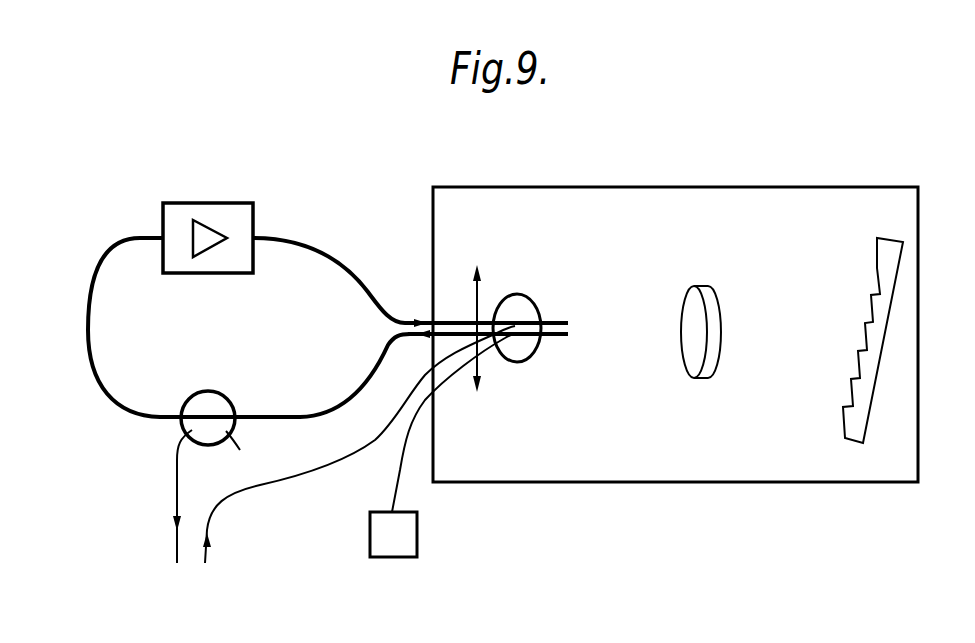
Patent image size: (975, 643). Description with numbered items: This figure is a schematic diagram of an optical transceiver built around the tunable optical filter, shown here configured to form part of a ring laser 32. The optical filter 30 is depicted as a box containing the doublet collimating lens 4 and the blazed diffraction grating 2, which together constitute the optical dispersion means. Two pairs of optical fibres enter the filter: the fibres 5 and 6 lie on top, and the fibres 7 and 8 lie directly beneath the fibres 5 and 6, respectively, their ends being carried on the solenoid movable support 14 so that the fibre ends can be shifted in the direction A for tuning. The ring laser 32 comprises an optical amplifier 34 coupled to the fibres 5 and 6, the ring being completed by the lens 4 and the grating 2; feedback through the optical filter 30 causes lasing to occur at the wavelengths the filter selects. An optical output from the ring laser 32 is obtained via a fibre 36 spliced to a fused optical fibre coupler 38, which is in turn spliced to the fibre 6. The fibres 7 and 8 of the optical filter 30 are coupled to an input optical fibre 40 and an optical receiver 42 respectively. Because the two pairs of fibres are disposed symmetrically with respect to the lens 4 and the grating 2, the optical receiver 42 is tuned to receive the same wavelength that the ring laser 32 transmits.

The blazed diffraction grating 2 is at (872, 270).
The doublet collimating lens 4 is at (720, 296).
The fibre 5 is at (405, 320).
The fibre 6 is at (398, 340).
The fibre 7 is at (549, 345).
The fibre 8 is at (561, 345).
The solenoid movable support 14 is at (522, 310).
The optical filter 30 is at (621, 182).
The ring laser 32 is at (376, 222).
The optical amplifier 34 is at (217, 203).
The fibre 36 is at (175, 472).
The fused optical fibre coupler 38 is at (193, 393).
The input optical fibre 40 is at (337, 466).
The optical receiver 42 is at (417, 532).
The direction of movement A is at (476, 305).